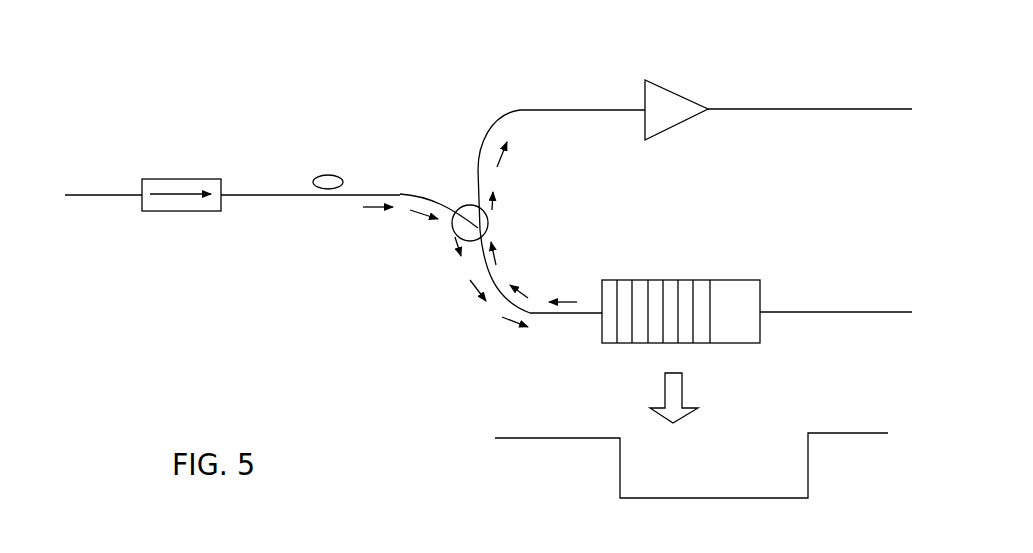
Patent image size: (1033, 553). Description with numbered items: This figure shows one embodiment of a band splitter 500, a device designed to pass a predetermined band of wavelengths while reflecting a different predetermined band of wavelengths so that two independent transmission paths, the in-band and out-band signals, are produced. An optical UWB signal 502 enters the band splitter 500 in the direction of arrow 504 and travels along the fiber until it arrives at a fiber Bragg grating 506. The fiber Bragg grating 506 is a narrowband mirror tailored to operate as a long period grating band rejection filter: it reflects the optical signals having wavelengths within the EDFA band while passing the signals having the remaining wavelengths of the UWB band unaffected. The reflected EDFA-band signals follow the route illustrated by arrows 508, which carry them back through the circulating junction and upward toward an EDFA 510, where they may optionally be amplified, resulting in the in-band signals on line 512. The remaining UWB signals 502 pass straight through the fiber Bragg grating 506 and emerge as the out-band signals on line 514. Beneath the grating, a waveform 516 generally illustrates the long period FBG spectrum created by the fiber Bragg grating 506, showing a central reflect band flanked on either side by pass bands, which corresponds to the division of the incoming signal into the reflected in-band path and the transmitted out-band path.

The band splitter 500 is at (244, 70).
The optical UWB signal 502 is at (317, 178).
The arrow 504 is at (185, 184).
The fiber Bragg grating 506 is at (690, 353).
The arrows 508 is at (500, 260).
The EDFA 510 is at (671, 92).
The line 512 is at (762, 110).
The line 514 is at (830, 312).
The waveform 516 is at (473, 466).